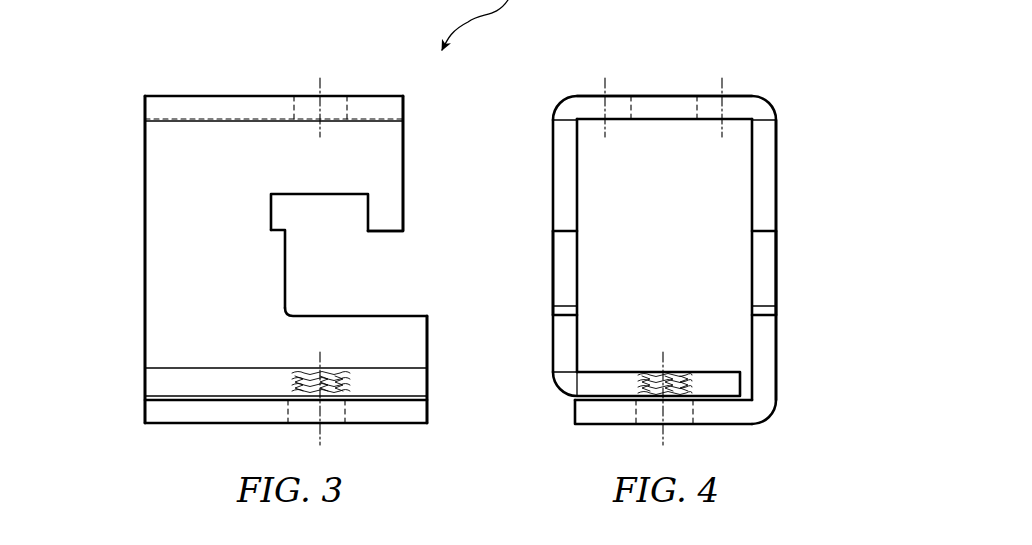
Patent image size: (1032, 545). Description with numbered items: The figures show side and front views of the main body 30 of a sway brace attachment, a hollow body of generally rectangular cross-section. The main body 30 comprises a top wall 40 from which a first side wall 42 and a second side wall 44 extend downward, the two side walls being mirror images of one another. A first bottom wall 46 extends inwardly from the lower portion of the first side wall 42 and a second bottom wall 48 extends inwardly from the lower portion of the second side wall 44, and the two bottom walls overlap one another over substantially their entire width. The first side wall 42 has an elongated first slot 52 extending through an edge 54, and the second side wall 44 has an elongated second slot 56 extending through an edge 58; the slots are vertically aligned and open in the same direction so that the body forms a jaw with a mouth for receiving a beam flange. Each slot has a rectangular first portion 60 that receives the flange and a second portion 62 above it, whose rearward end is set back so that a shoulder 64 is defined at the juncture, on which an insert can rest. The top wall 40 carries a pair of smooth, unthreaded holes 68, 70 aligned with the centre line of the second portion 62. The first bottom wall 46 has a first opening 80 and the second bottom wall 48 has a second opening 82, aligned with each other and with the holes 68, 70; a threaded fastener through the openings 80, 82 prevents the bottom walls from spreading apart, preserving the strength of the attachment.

In FIG. 4, the main body 30 is at (547, 445).
In FIG. 3, the top wall 40 is at (180, 105).
In FIG. 4, the top wall 40 is at (655, 105).
In FIG. 3, the first side wall 42 is at (155, 165).
In FIG. 4, the first side wall 42 is at (560, 165).
In FIG. 4, the second side wall 44 is at (765, 170).
In FIG. 3, the first bottom wall 46 is at (150, 383).
In FIG. 4, the first bottom wall 46 is at (705, 372).
In FIG. 3, the second bottom wall 48 is at (176, 418).
In FIG. 4, the second bottom wall 48 is at (730, 418).
In FIG. 3, the first slot 52 is at (395, 315).
In FIG. 4, the first slot 52 is at (556, 270).
In FIG. 3, the edge 54 is at (410, 165).
In FIG. 4, the second slot 56 is at (772, 270).
In FIG. 3, the edge 58 is at (385, 163).
In FIG. 3, the first portion 60 is at (366, 283).
In FIG. 3, the second portion 62 is at (333, 221).
In FIG. 3, the shoulder 64 is at (290, 228).
In FIG. 3, the hole 68 is at (347, 110).
In FIG. 4, the hole 68 is at (577, 108).
In FIG. 4, the hole 70 is at (750, 108).
In FIG. 3, the first opening 80 is at (342, 383).
In FIG. 4, the first opening 80 is at (650, 373).
In FIG. 3, the second opening 82 is at (340, 410).
In FIG. 4, the second opening 82 is at (636, 410).